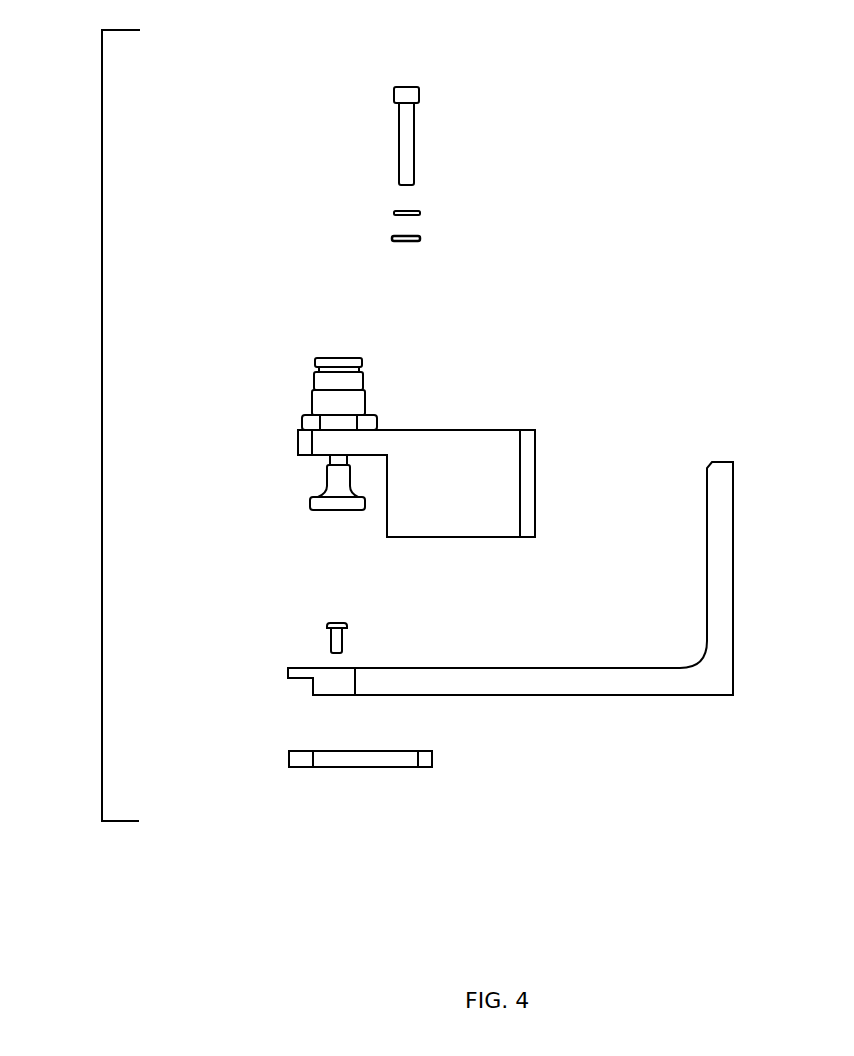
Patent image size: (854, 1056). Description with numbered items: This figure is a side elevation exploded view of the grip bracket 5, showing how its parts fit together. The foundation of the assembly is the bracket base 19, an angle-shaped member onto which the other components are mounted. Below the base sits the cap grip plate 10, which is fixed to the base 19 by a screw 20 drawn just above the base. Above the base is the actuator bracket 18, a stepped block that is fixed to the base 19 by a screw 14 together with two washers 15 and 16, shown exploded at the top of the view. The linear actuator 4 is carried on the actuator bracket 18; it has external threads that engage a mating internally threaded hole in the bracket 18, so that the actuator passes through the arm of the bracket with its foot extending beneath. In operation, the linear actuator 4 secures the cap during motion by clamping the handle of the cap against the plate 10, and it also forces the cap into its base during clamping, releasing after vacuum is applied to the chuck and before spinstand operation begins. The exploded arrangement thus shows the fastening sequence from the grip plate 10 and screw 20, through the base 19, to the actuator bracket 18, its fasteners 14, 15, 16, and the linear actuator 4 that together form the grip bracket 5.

The grip bracket 5 is at (85, 425).
The screw 14 is at (421, 130).
The washer 15 is at (420, 210).
The washer 16 is at (425, 237).
The linear actuator 4 is at (337, 357).
The actuator bracket 18 is at (537, 475).
The bracket base 19 is at (600, 697).
The screw 20 is at (326, 636).
The cap grip plate 10 is at (361, 769).